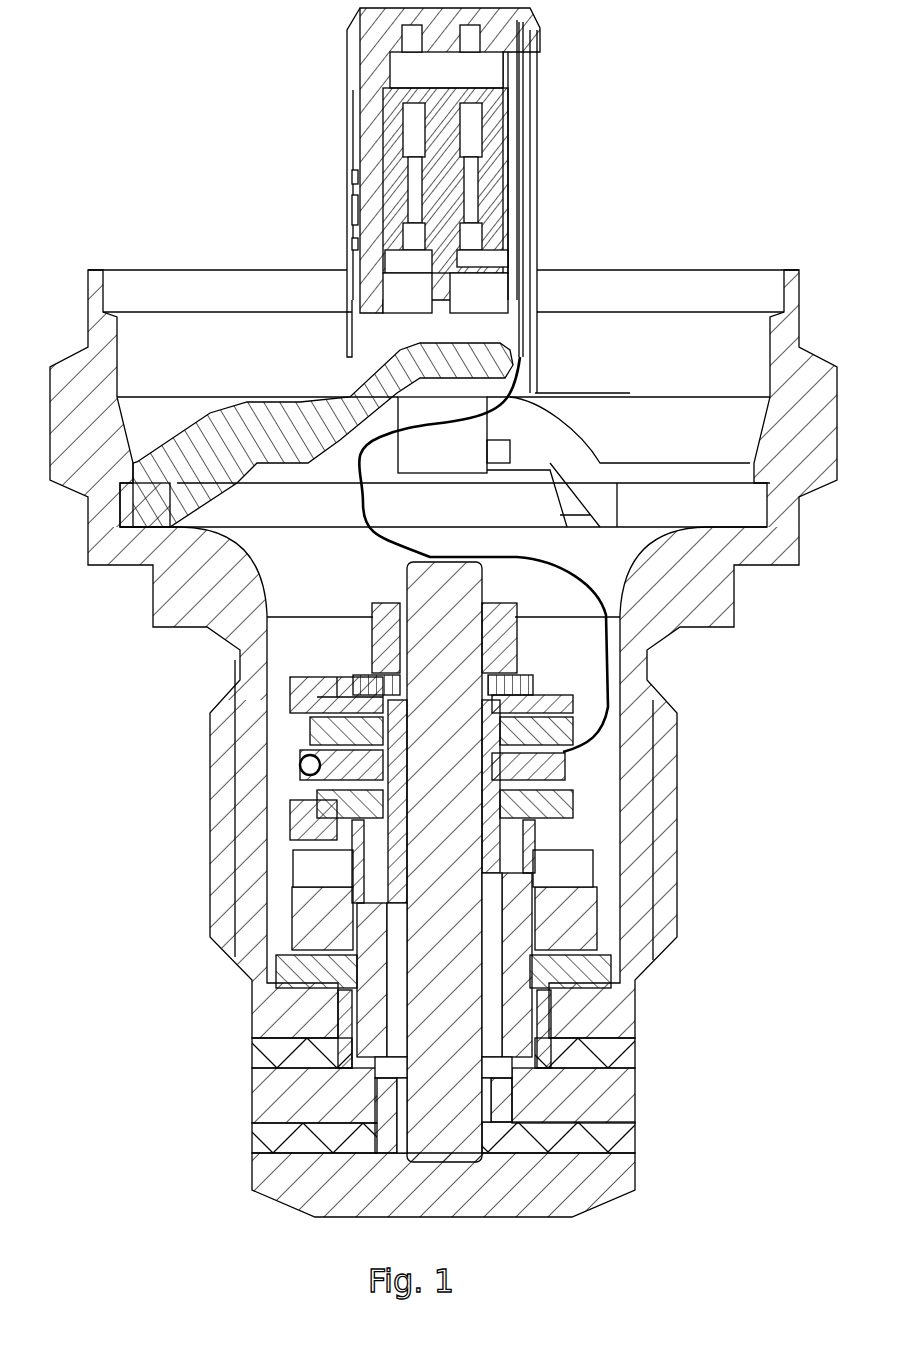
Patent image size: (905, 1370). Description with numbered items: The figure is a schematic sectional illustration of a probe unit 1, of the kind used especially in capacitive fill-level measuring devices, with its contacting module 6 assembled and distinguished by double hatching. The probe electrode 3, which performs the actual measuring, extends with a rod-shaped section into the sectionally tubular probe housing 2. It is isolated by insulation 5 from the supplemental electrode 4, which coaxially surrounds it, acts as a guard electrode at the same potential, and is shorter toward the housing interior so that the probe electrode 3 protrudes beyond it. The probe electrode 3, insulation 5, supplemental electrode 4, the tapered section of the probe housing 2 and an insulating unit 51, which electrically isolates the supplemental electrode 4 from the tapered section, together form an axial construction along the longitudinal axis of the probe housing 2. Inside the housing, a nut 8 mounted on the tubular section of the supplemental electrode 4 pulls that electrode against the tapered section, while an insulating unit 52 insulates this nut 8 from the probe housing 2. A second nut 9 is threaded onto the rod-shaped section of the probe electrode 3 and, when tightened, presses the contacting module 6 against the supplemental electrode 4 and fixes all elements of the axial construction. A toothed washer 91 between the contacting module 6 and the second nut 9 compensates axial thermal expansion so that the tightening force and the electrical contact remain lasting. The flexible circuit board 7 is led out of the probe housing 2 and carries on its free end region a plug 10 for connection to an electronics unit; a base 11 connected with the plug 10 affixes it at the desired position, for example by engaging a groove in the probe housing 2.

The probe unit 1 is at (137, 103).
The probe housing 2 is at (443, 654).
The probe electrode 3 is at (479, 1183).
The supplemental electrode 4 is at (478, 1095).
The insulation 5 is at (478, 1128).
The insulating unit 51 is at (490, 1046).
The insulating unit 52 is at (503, 965).
The contacting module 6 is at (512, 758).
The flexible circuit board 7 is at (565, 189).
The nut 8 is at (504, 944).
The second nut 9 is at (543, 638).
The toothed washer 91 is at (547, 692).
The plug 10 is at (444, 200).
The base 11 is at (99, 517).